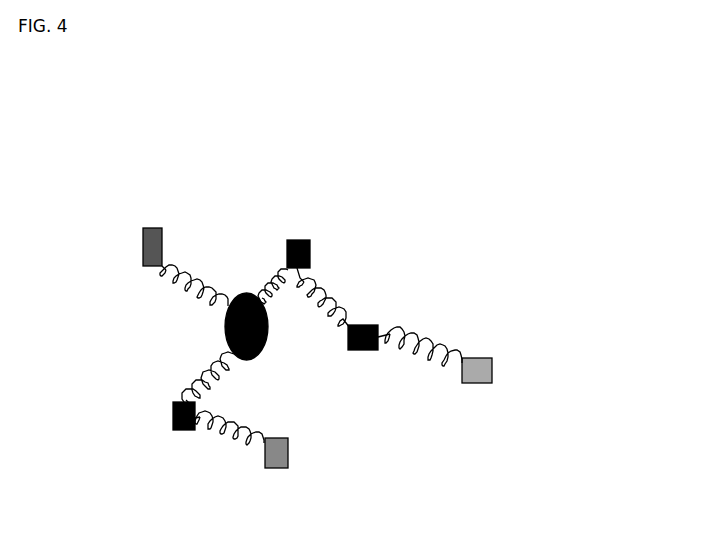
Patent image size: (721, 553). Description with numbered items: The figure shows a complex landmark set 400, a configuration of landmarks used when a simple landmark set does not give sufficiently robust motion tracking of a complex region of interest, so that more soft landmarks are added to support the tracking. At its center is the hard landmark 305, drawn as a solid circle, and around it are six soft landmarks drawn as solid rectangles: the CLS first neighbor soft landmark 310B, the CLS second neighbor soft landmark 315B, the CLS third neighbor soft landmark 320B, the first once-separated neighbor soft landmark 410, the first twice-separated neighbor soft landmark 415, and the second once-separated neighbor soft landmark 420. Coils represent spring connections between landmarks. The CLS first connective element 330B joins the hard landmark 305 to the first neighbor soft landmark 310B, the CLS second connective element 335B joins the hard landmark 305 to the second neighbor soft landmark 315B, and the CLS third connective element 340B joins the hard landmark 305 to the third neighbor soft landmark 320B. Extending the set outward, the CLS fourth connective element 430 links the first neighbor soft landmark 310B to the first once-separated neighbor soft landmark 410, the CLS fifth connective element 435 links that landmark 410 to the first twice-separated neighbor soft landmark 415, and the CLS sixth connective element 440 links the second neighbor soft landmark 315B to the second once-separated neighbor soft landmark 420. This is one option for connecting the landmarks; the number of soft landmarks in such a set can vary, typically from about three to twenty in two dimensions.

The complex landmark set 400 is at (548, 335).
The hard landmark 305 is at (238, 283).
The CLS first neighbor soft landmark 310B is at (313, 226).
The CLS third neighbor soft landmark 320B is at (145, 229).
The CLS second neighbor soft landmark 315B is at (165, 425).
The first once-separated neighbor soft landmark 410 is at (372, 312).
The first twice-separated neighbor soft landmark 415 is at (478, 356).
The second once-separated neighbor soft landmark 420 is at (292, 469).
The CLS third connective element 340B is at (184, 290).
The CLS first connective element 330B is at (284, 298).
The CLS fourth connective element 430 is at (336, 292).
The CLS second connective element 335B is at (195, 368).
The CLS sixth connective element 440 is at (228, 446).
The CLS fifth connective element 435 is at (407, 373).